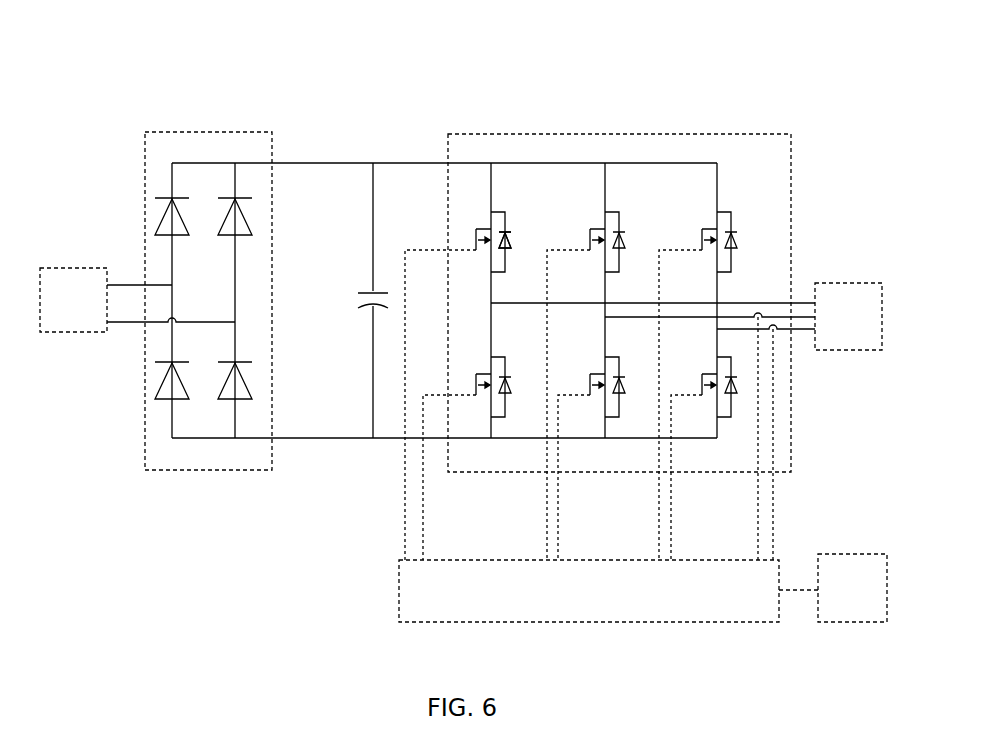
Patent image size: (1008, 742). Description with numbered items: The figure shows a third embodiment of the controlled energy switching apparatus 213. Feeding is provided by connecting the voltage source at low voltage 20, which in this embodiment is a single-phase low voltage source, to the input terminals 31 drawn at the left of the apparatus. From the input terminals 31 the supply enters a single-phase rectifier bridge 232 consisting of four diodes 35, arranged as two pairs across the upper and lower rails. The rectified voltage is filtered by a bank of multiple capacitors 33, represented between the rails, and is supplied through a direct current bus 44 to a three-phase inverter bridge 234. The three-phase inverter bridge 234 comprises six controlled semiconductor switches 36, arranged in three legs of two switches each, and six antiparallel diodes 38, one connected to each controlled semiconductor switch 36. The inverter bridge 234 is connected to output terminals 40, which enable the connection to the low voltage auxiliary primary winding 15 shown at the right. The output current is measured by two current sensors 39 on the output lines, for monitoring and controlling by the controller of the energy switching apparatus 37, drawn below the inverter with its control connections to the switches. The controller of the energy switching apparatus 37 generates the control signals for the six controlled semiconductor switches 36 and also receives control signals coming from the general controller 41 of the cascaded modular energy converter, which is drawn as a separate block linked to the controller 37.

The controlled energy switching apparatus 213 is at (223, 60).
The single-phase rectifier bridge 232 is at (177, 284).
The diode 35 is at (165, 215).
The voltage source at low voltage 20 is at (90, 265).
The input terminals 31 is at (128, 335).
The direct current bus 44 is at (372, 161).
The capacitors 33 is at (365, 290).
The three-phase inverter bridge 234 is at (588, 329).
The controlled semiconductor switch 36 is at (480, 228).
The antiparallel diode 38 is at (509, 240).
The current sensors 39 is at (760, 313).
The output terminals 40 is at (805, 333).
The low voltage auxiliary primary winding 15 is at (840, 283).
The controller of the energy switching apparatus 37 is at (397, 560).
The general controller 41 is at (833, 553).